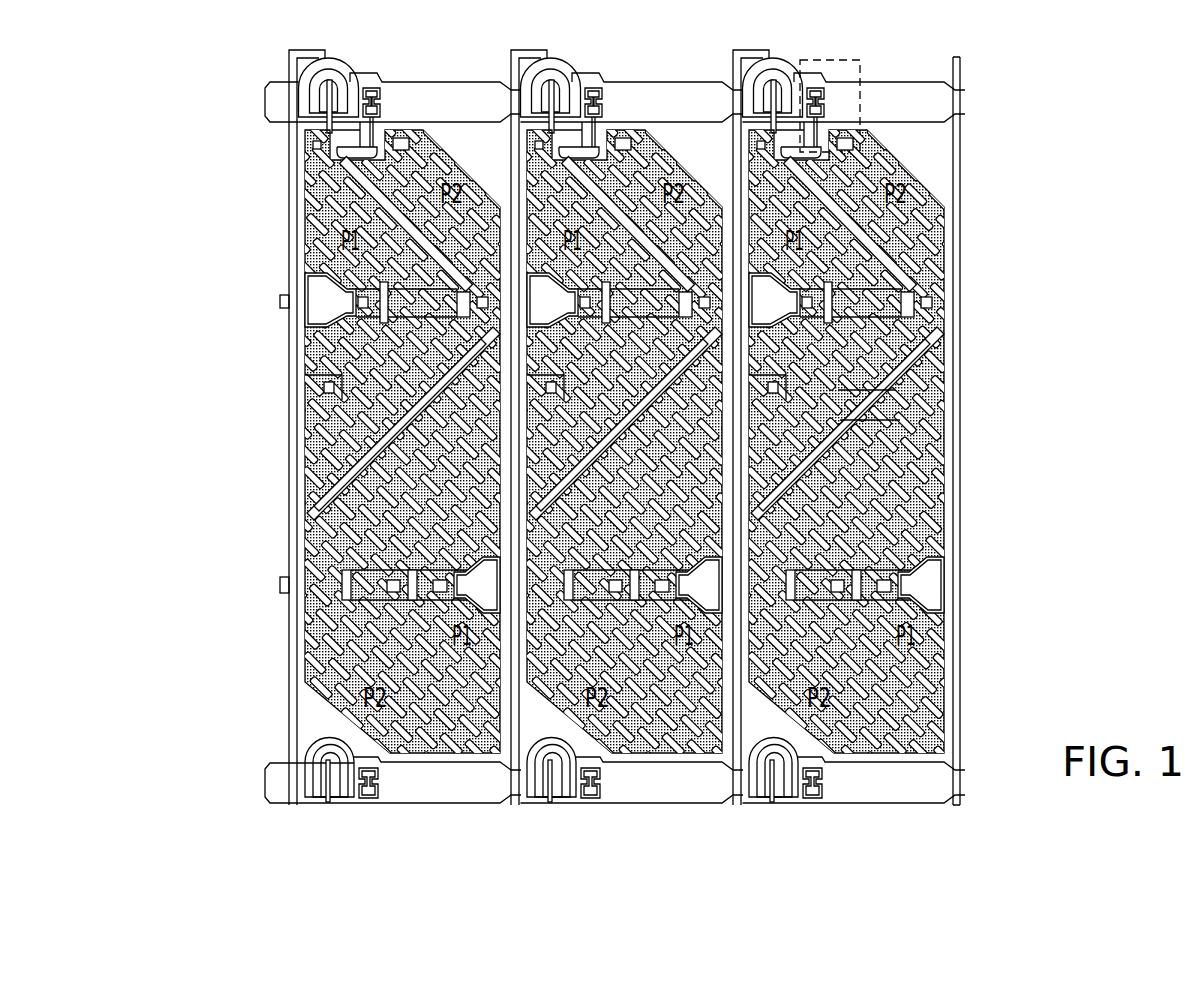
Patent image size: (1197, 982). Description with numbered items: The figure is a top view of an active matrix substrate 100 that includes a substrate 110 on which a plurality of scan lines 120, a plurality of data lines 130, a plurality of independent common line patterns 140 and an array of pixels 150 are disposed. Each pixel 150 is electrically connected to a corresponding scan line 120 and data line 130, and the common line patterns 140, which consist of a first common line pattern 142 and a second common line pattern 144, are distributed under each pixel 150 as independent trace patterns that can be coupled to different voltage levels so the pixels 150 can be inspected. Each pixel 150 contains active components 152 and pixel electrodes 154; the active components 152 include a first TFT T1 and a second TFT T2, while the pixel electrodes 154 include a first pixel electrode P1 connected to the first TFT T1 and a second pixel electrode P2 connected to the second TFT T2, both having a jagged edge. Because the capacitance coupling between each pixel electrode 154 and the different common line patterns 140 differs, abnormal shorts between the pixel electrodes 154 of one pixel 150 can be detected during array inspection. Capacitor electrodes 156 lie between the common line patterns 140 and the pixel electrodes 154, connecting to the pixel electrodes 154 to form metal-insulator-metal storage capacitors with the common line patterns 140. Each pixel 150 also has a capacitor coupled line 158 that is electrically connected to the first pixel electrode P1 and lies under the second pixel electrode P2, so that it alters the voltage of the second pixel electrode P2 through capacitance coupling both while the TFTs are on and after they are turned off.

The active matrix substrate 100 is at (598, 456).
The substrate 110 is at (951, 137).
The scan line 120 is at (936, 111).
The data line 130 is at (288, 173).
The common line pattern 140 is at (210, 444).
The first common line pattern 142 is at (289, 303).
The second common line pattern 144 is at (290, 583).
The pixel 150 is at (812, 456).
The active component 152 is at (812, 456).
The pixel electrode 154 is at (812, 456).
The capacitor electrode 156 is at (907, 307).
The capacitor coupled line 158 is at (976, 535).
The first TFT T1 is at (905, 284).
The second TFT T2 is at (862, 108).
The first pixel electrode P1 is at (930, 367).
The second pixel electrode P2 is at (927, 503).